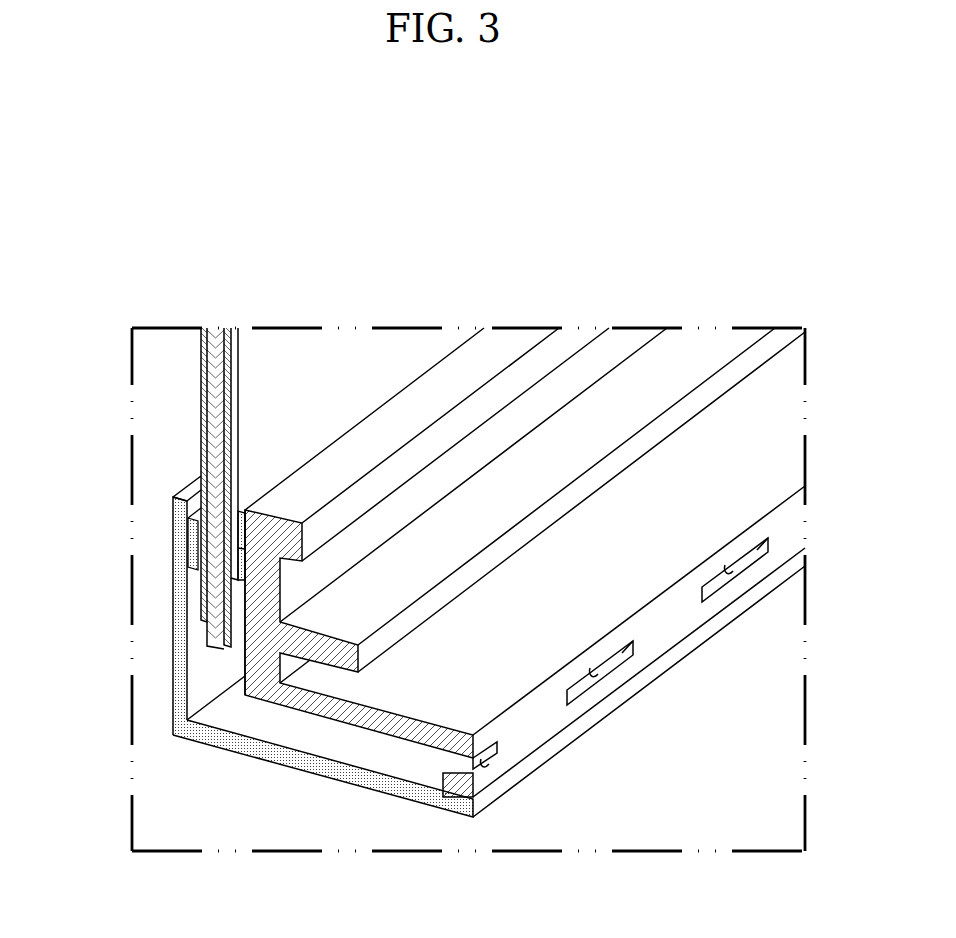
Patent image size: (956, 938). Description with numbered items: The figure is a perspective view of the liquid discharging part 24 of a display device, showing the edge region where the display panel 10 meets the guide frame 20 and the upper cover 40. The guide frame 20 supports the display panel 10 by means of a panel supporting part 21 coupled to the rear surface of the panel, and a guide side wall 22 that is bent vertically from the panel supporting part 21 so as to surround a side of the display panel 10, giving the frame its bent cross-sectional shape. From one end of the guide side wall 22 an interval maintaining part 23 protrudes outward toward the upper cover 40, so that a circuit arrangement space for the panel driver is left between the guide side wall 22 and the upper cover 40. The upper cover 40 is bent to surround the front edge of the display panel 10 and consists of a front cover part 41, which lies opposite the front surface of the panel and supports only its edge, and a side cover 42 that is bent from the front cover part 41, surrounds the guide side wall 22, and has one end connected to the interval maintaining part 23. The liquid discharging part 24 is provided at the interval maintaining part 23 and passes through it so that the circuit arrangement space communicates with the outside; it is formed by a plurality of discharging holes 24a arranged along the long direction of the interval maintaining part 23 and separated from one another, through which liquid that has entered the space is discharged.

The display panel 10 is at (293, 390).
The guide frame 20 is at (442, 603).
The panel supporting part 21 is at (258, 597).
The guide side wall 22 is at (350, 713).
The interval maintaining part 23 is at (513, 730).
The liquid discharging part 24 is at (638, 738).
The discharging hole 24a is at (483, 762).
The upper cover 40 is at (73, 700).
The front cover part 41 is at (180, 692).
The side cover 42 is at (207, 735).